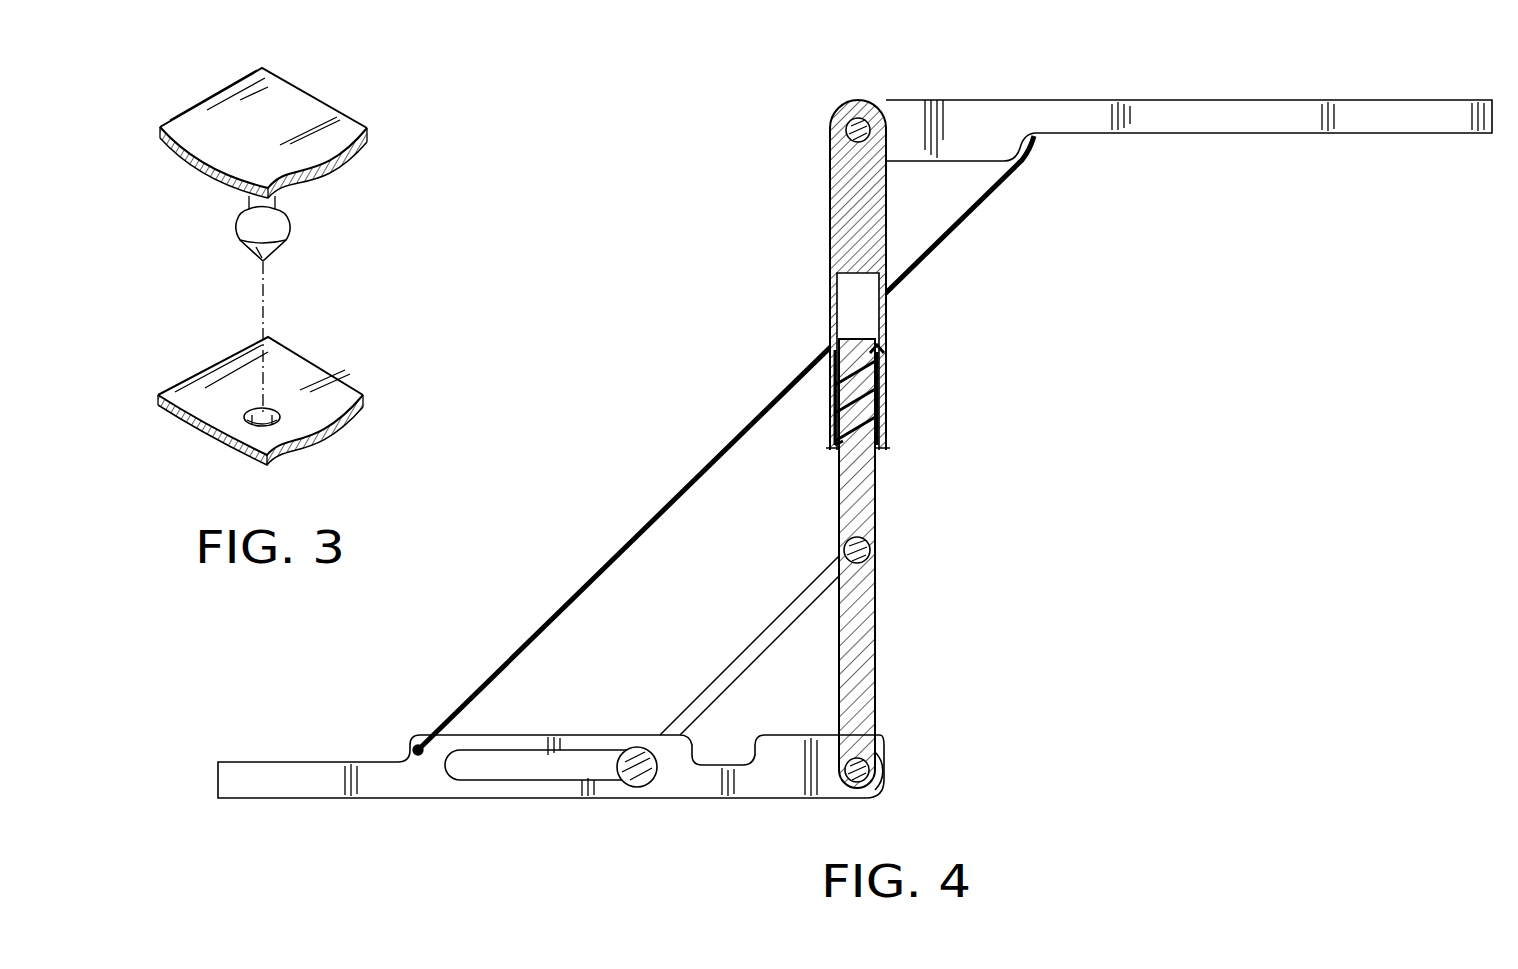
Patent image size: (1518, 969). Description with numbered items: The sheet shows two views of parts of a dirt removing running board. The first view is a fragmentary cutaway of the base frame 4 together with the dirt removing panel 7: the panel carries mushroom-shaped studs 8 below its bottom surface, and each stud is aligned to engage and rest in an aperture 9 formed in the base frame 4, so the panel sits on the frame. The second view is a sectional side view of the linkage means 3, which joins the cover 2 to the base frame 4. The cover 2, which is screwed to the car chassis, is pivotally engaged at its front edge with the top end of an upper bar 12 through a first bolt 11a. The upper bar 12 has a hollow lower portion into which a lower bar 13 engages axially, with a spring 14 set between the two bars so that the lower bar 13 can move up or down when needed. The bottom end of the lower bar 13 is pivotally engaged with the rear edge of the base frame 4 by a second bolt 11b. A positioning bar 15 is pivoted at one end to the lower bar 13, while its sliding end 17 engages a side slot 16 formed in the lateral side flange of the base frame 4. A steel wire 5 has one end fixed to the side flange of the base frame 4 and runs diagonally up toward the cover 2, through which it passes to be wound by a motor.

In FIG. 4, the cover 2 is at (1210, 110).
In FIG. 4, the linkage means 3 is at (805, 315).
In FIG. 3, the base frame 4 is at (335, 392).
In FIG. 4, the base frame 4 is at (343, 795).
In FIG. 4, the steel wire 5 is at (955, 232).
In FIG. 3, the dirt removing panel 7 is at (312, 112).
In FIG. 3, the mushroom-shaped stud 8 is at (283, 218).
In FIG. 3, the aperture 9 is at (257, 410).
In FIG. 4, the first bolt 11a is at (830, 128).
In FIG. 4, the second bolt 11b is at (878, 768).
In FIG. 4, the upper bar 12 is at (830, 218).
In FIG. 4, the lower bar 13 is at (875, 632).
In FIG. 4, the spring 14 is at (880, 383).
In FIG. 4, the positioning bar 15 is at (762, 645).
In FIG. 4, the side slot 16 is at (520, 775).
In FIG. 4, the sliding end 17 is at (640, 780).